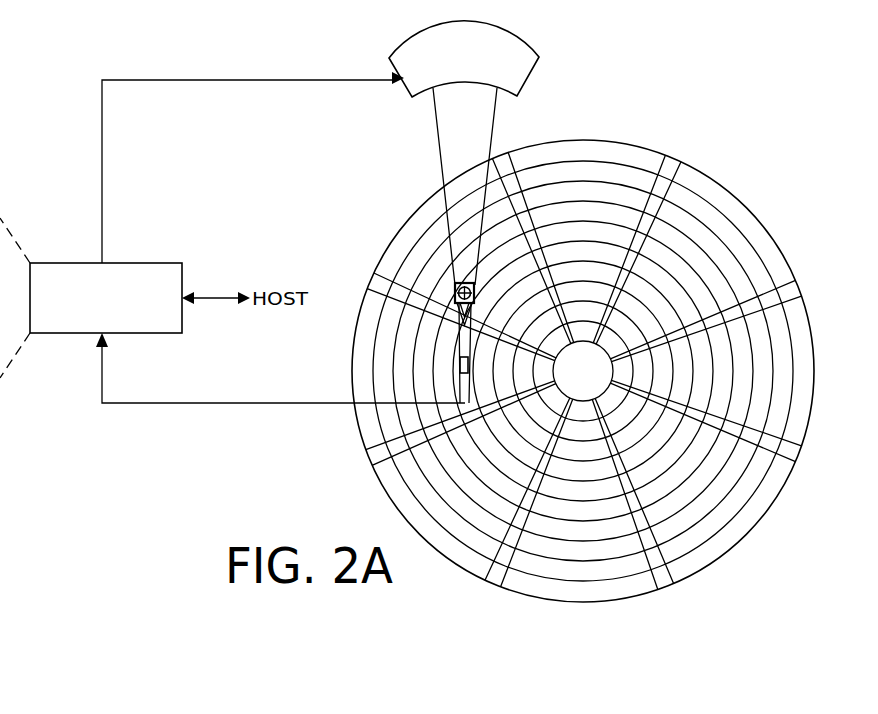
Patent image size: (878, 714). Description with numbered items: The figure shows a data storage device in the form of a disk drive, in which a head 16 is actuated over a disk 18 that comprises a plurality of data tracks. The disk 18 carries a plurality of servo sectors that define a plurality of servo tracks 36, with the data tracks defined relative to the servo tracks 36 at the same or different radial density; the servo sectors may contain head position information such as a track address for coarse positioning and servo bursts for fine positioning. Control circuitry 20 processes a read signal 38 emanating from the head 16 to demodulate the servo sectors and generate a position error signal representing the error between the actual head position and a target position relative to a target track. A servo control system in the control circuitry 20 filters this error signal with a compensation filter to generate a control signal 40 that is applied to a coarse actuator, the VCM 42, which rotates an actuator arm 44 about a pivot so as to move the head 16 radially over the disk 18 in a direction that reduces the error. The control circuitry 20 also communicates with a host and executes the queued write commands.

The head 16 is at (452, 377).
The disk 18 is at (748, 190).
The control circuitry 20 is at (144, 262).
The servo track 36 is at (573, 167).
The read signal 38 is at (237, 404).
The control signal 40 is at (102, 163).
The VCM 42 is at (410, 92).
The actuator arm 44 is at (444, 164).